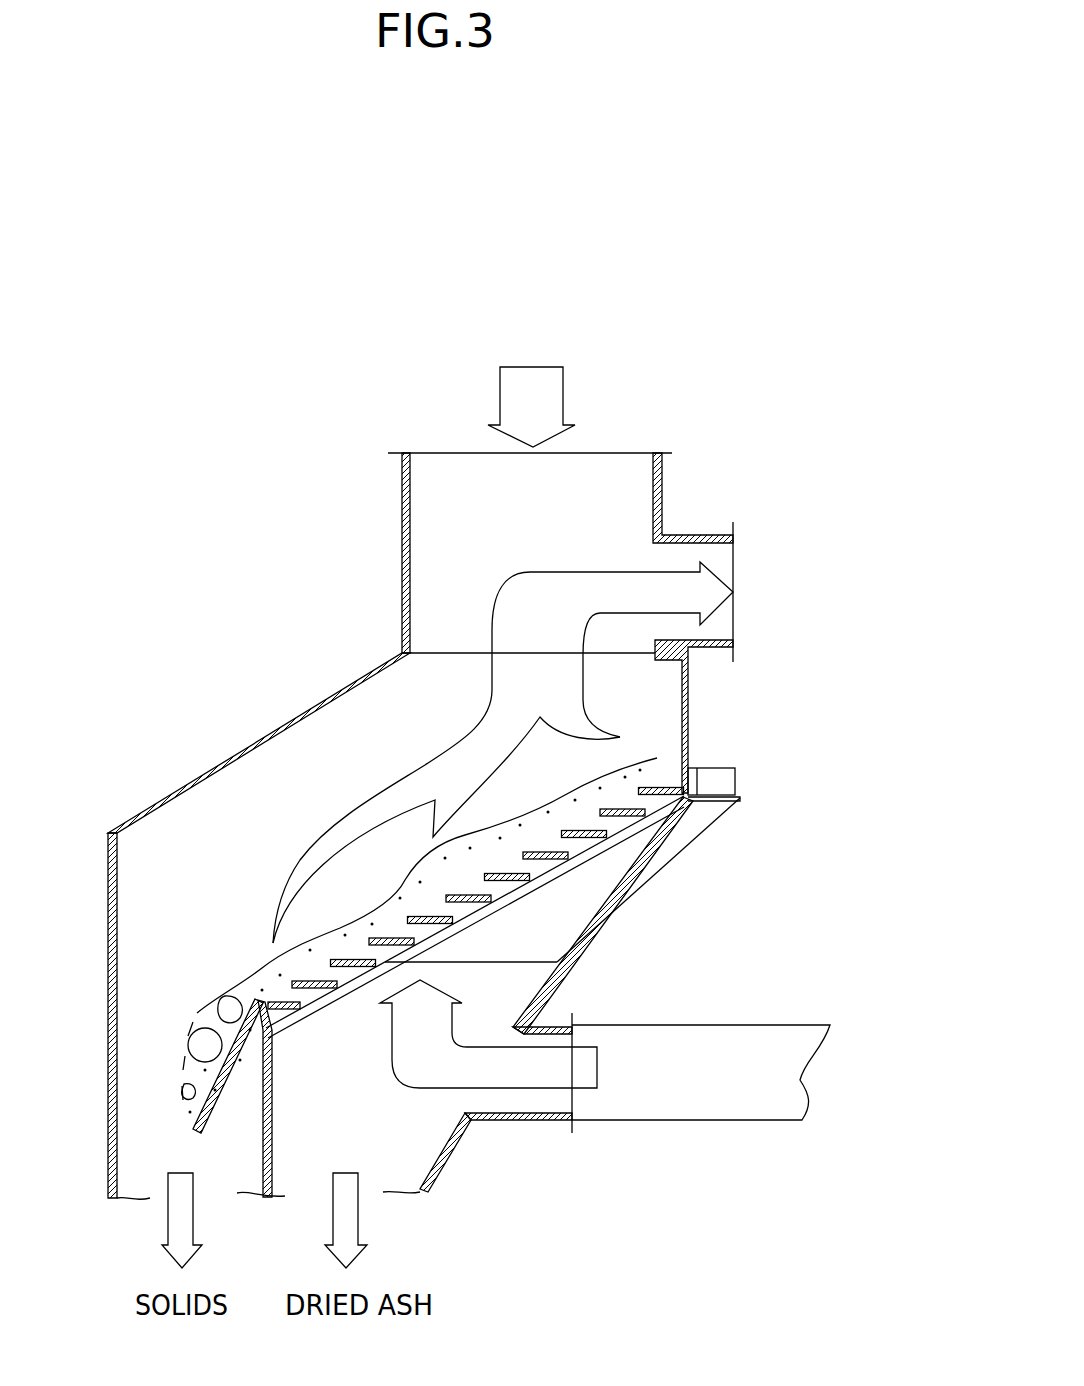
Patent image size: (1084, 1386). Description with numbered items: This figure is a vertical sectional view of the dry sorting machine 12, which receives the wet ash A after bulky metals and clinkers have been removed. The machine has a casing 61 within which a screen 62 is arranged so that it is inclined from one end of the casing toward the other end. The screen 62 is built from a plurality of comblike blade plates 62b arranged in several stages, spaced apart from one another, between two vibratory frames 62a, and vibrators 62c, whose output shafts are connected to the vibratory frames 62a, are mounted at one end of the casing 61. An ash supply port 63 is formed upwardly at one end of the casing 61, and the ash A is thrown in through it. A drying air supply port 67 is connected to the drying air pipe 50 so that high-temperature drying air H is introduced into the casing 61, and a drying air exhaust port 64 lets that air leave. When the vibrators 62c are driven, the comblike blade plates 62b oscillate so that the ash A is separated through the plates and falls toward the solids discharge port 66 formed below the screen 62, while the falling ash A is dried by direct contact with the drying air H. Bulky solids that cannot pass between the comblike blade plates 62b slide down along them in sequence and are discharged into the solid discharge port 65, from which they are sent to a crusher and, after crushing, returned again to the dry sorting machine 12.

The dry sorting machine 12 is at (278, 632).
The drying air pipe 50 is at (683, 1122).
The casing 61 is at (230, 755).
The screen 62 is at (503, 892).
The vibratory frames 62a is at (537, 826).
The comblike blade plates 62b is at (312, 983).
The vibrators 62c is at (735, 782).
The ash supply port 63 is at (615, 473).
The drying air exhaust port 64 is at (733, 615).
The solid discharge port 65 is at (143, 1150).
The solids discharge port 66 is at (400, 1155).
The drying air supply port 67 is at (533, 1120).
The drying air H is at (530, 572).
The ash A is at (483, 850).